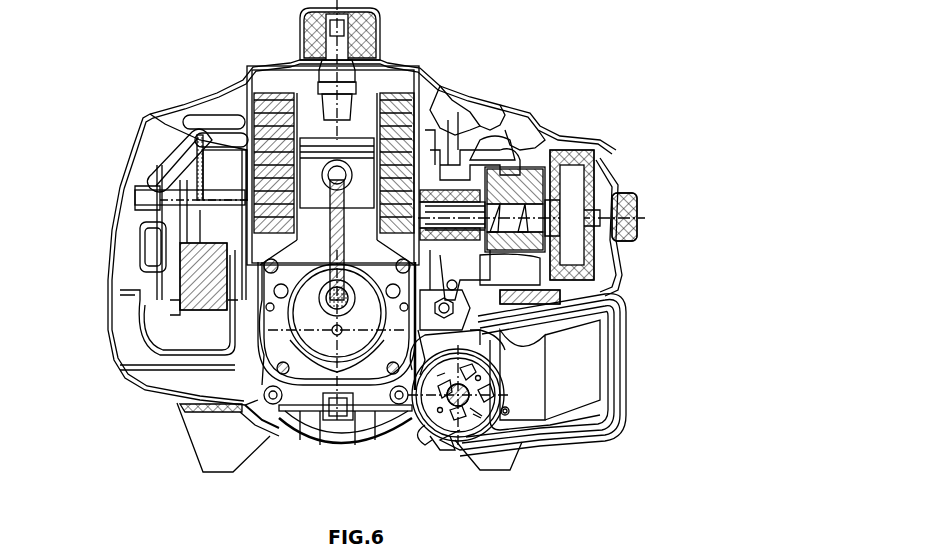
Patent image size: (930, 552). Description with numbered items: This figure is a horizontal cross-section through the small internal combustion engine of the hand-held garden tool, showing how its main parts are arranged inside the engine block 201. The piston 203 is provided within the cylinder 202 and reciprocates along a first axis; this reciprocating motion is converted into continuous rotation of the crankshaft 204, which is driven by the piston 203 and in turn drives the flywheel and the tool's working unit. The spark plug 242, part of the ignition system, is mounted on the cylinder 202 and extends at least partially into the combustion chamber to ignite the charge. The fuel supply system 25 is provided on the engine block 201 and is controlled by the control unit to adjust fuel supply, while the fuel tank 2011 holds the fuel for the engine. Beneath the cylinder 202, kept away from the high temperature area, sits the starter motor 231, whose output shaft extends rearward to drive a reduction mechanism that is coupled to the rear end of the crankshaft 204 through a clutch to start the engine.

The engine block 201 is at (245, 80).
The spark plug 242 is at (388, 62).
The piston 203 is at (175, 118).
The fuel supply system 25 is at (568, 140).
The cylinder 202 is at (167, 262).
The crankshaft 204 is at (200, 405).
The fuel tank 2011 is at (553, 380).
The starter motor 231 is at (470, 440).